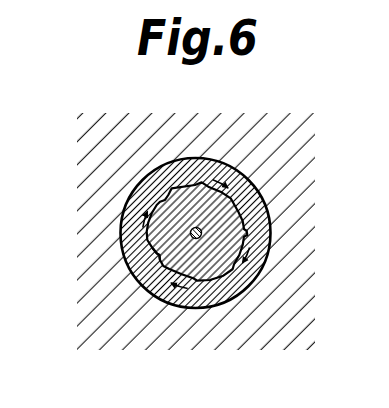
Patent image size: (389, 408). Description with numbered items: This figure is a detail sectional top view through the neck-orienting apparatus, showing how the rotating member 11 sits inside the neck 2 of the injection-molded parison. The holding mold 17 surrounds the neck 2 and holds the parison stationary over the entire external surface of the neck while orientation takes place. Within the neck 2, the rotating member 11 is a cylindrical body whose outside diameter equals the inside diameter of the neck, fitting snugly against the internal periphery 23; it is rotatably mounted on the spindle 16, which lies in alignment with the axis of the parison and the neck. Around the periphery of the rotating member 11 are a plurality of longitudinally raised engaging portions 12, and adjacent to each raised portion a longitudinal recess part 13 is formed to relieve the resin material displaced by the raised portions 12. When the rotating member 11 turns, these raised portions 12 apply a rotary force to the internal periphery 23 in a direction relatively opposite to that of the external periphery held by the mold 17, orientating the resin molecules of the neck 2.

The neck 2 is at (244, 228).
The rotating member 11 is at (212, 265).
The raised engaging portions 12 is at (201, 183).
The longitudinal recess parts 13 is at (173, 188).
The spindle 16 is at (190, 233).
The holding mold 17 is at (300, 212).
The internal periphery 23 is at (160, 257).